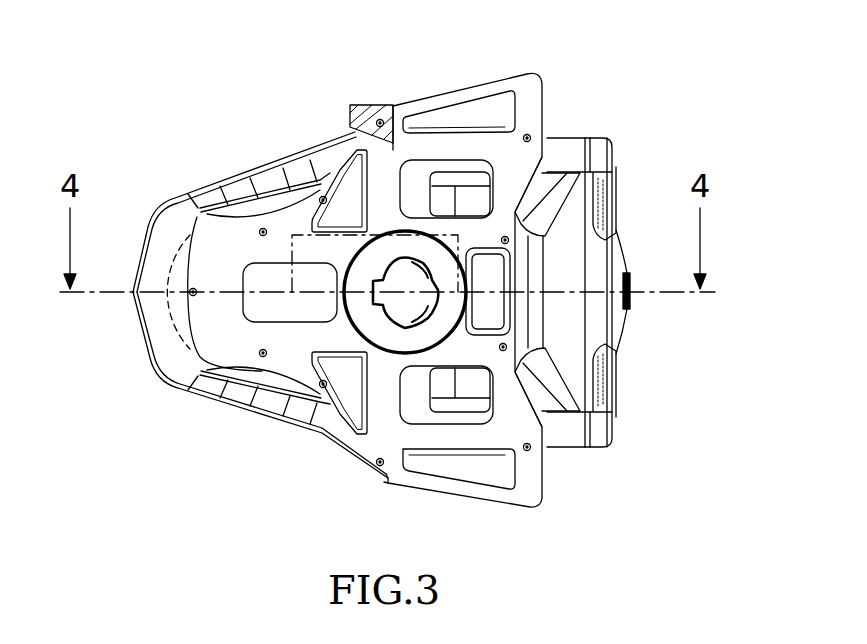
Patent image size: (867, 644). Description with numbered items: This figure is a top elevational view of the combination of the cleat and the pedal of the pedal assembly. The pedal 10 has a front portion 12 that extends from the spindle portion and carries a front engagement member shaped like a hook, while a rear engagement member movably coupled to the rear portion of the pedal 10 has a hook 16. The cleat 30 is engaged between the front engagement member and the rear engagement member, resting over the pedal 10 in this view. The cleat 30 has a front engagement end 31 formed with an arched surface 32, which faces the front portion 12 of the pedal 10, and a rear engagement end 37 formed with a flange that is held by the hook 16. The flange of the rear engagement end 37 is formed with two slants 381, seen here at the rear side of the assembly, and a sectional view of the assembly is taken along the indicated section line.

The pedal 10 is at (246, 405).
The front portion 12 is at (167, 345).
The hook 16 is at (570, 323).
The cleat 30 is at (393, 142).
The front engagement end 31 is at (211, 235).
The arched surface 32 is at (172, 262).
The rear engagement end 37 is at (526, 333).
The slants 381 is at (533, 193).